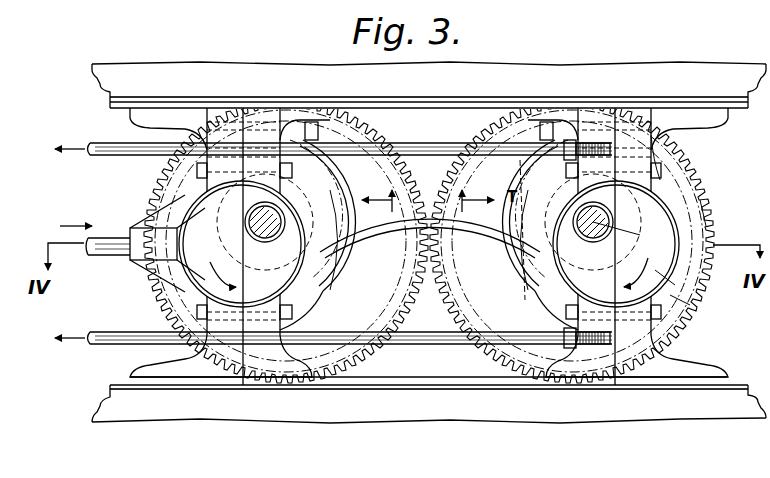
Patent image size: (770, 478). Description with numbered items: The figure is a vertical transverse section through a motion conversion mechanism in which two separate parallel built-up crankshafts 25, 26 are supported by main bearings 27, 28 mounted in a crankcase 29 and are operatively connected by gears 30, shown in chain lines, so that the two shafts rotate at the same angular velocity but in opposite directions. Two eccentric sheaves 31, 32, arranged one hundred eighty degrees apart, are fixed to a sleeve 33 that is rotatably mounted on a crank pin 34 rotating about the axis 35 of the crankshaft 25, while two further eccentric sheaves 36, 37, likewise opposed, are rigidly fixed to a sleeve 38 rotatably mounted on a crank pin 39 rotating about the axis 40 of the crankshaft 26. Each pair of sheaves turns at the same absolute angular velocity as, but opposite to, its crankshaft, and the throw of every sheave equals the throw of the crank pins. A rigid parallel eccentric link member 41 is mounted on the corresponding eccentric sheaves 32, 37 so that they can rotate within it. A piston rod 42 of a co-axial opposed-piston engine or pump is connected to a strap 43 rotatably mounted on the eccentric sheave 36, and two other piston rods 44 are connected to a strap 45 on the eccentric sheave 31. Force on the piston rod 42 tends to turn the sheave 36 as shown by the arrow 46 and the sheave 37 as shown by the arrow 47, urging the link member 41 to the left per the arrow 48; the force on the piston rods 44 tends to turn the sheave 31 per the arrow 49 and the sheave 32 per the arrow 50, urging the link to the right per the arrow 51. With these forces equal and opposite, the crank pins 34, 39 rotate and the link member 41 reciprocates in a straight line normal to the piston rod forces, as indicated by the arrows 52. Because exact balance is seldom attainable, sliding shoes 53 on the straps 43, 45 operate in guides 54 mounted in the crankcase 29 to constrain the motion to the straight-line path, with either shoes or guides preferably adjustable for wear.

The crankshaft 25 is at (522, 270).
The crankshaft 26 is at (338, 270).
The main bearing 27 is at (527, 284).
The main bearing 28 is at (331, 283).
The crankcase 29 is at (190, 78).
The gears 30 is at (165, 178).
The eccentric sheave 31 is at (702, 214).
The eccentric sheave 32 is at (533, 157).
The sleeve 33 is at (683, 175).
The crank pin 34 is at (640, 235).
The axis 35 is at (548, 292).
The eccentric sheave 36 is at (165, 277).
The eccentric sheave 37 is at (402, 155).
The sleeve 38 is at (247, 222).
The crank pin 39 is at (429, 244).
The axis 40 is at (338, 250).
The rigid parallel eccentric link member 41 is at (433, 228).
The piston rod 42 is at (100, 238).
The strap 43 is at (143, 260).
The piston rods 44 is at (103, 148).
The strap 45 is at (680, 300).
The arrow 46 is at (170, 310).
The arrow 47 is at (320, 158).
The arrow 48 is at (374, 192).
The arrow 49 is at (660, 278).
The arrow 50 is at (524, 185).
The arrow 51 is at (473, 191).
The arrows 52 is at (426, 213).
The sliding shoes 53 is at (724, 109).
The guides 54 is at (693, 93).